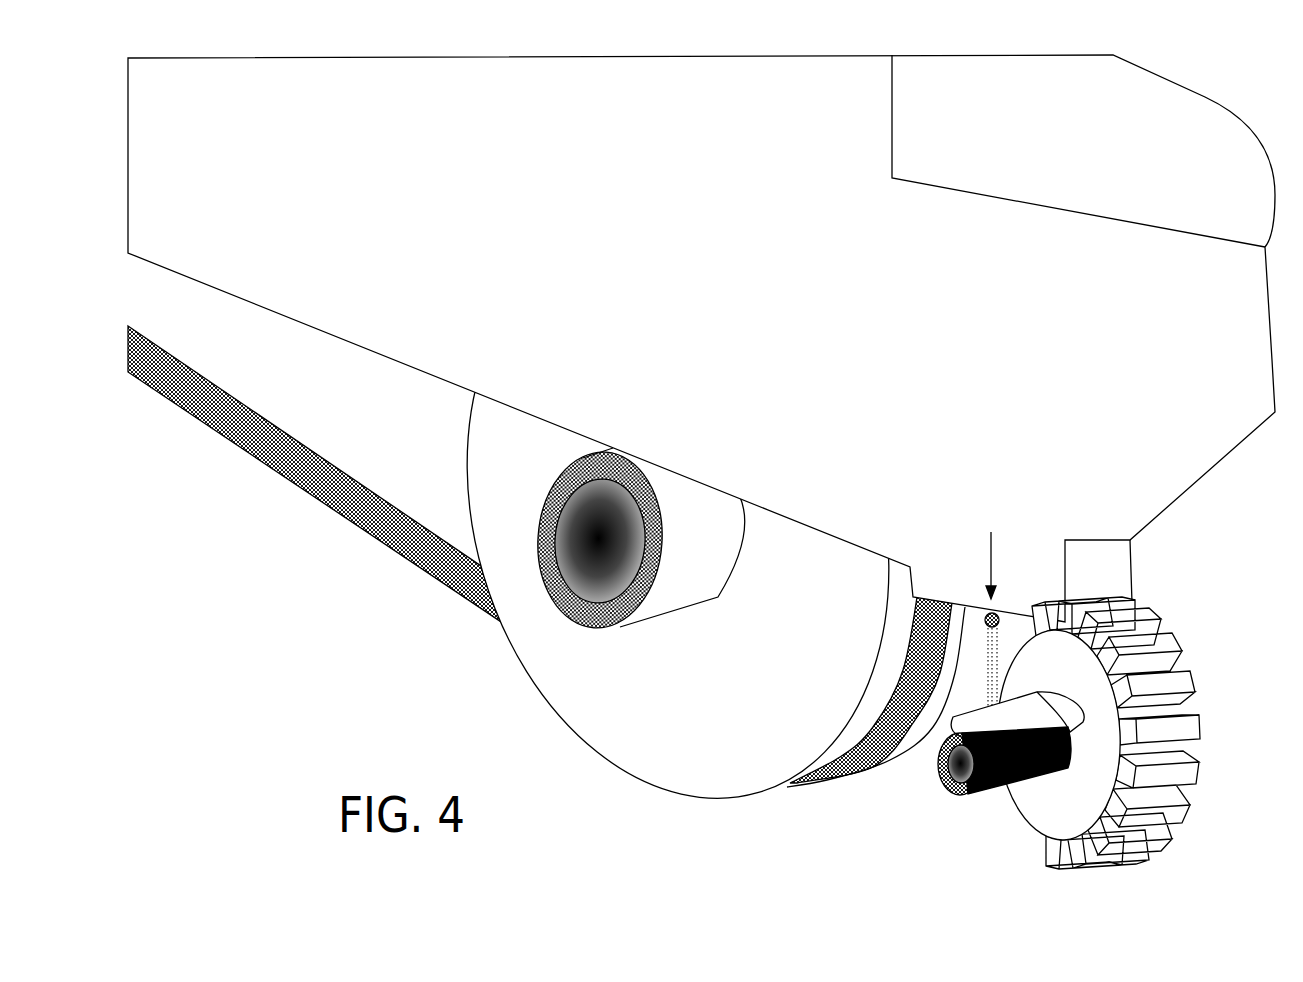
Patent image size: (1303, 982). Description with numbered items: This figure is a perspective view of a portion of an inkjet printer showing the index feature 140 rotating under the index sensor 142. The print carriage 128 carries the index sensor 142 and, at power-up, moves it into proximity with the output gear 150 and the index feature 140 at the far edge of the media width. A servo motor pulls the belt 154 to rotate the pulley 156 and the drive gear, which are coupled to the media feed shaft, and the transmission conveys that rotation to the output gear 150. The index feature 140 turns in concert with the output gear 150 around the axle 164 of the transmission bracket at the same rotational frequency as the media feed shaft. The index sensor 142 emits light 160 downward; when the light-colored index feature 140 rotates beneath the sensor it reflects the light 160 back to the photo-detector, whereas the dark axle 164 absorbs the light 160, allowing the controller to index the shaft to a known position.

The print carriage 128 is at (1207, 467).
The index feature 140 is at (1047, 700).
The index sensor 142 is at (1000, 614).
The output gear 150 is at (1053, 830).
The belt 154 is at (342, 515).
The pulley 156 is at (528, 665).
The light 160 is at (977, 627).
The axle 164 is at (980, 797).